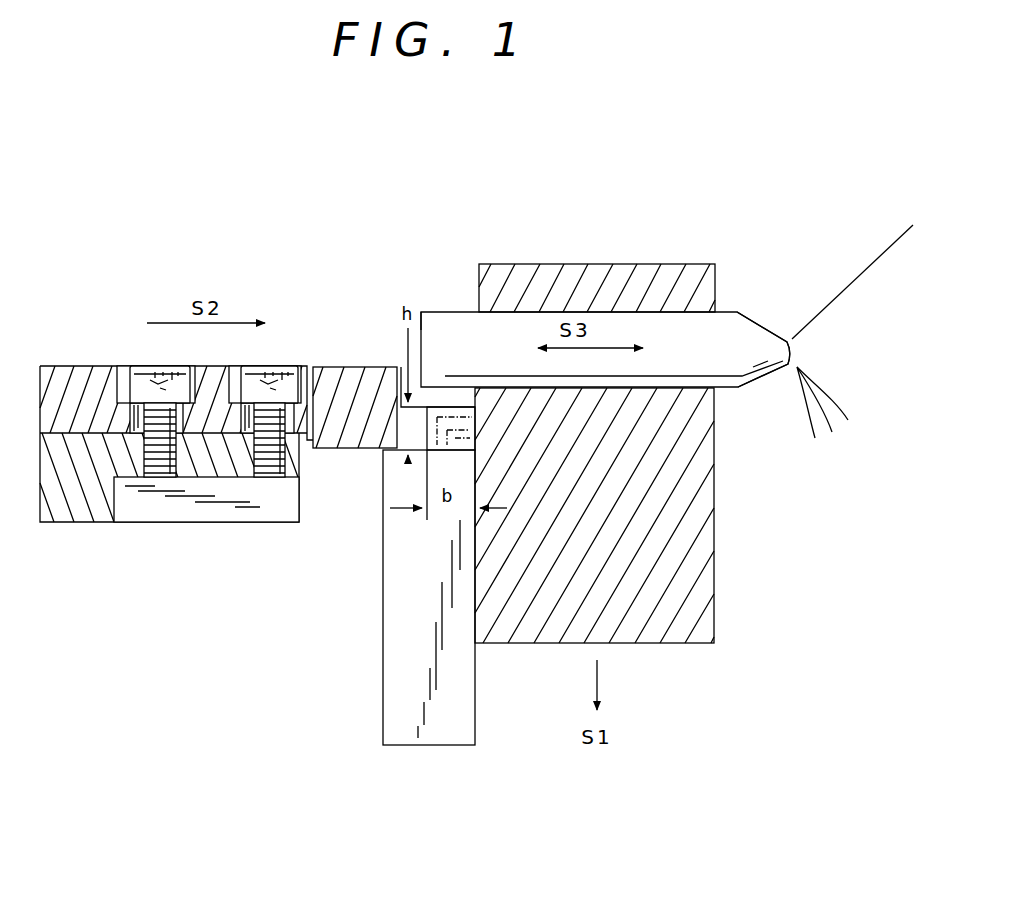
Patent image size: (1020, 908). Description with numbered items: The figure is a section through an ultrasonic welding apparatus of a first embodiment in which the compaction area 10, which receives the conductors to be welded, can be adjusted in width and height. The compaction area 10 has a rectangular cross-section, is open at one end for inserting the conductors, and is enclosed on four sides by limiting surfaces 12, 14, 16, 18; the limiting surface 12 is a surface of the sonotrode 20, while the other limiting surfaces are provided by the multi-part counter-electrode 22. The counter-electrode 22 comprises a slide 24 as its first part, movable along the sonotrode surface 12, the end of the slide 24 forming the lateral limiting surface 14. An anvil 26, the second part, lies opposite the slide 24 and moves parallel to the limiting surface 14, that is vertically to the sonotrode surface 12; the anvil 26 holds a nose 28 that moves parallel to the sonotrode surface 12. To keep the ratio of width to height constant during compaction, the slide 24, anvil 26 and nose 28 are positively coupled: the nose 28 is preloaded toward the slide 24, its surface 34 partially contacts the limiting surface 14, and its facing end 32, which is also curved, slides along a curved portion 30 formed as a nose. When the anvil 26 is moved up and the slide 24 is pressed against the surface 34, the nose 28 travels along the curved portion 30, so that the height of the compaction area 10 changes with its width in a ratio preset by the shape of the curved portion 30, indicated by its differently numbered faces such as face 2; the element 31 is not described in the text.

The face of the curved portion 2 is at (831, 405).
The compaction area 10 is at (472, 383).
The limiting surface 12 is at (425, 442).
The limiting surface 14 is at (400, 380).
The limiting surface 16 is at (477, 430).
The limiting surface 18 is at (458, 405).
The sonotrode 20 is at (440, 730).
The multi-part counter-electrode 22 is at (580, 205).
The slide 24 is at (340, 385).
The anvil 26 is at (682, 625).
The nose 28 is at (533, 332).
The curved portion 30 is at (848, 317).
The wire strands 31 is at (816, 417).
The end of the nose 32 is at (750, 348).
The surface of the nose 34 is at (416, 318).